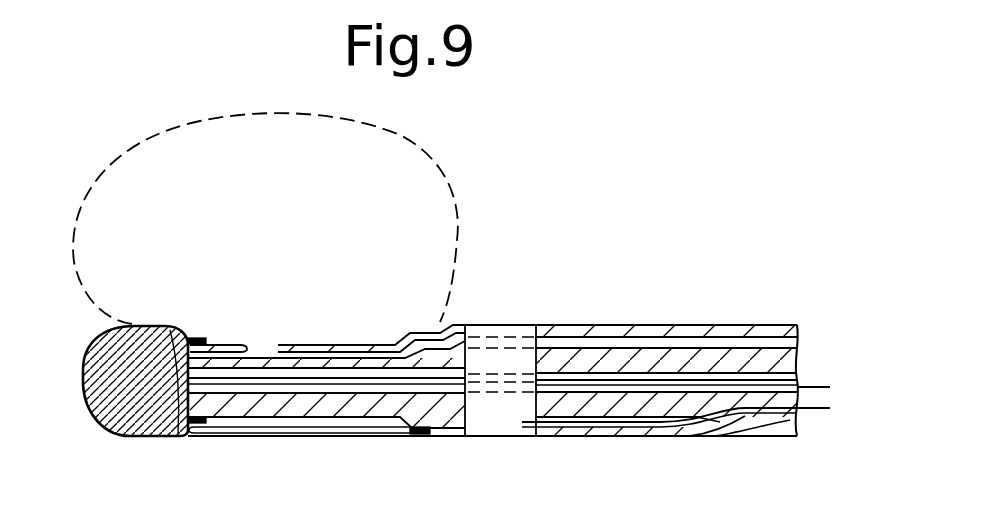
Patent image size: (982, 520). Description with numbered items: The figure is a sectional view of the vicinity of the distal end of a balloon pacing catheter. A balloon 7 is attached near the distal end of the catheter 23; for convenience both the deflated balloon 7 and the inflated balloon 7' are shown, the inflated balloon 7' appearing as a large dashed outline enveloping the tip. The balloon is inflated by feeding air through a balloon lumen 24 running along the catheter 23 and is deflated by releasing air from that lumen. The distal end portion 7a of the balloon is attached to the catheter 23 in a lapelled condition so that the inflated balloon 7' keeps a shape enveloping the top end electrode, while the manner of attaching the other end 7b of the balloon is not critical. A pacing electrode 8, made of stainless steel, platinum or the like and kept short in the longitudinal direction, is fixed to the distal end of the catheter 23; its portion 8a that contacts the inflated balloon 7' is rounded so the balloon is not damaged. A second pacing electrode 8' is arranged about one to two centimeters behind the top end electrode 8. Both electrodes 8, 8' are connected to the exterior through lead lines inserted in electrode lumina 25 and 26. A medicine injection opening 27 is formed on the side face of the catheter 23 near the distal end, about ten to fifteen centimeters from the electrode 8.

The inflated balloon 7' is at (272, 218).
The balloon 7 is at (492, 419).
The distal end portion of the balloon 7a is at (208, 436).
The other end of the balloon 7b is at (448, 324).
The pacing electrode 8 is at (135, 411).
The rounded portion of the electrode 8a is at (190, 438).
The second pacing electrode 8' is at (631, 411).
The catheter 23 is at (460, 443).
The balloon lumen 24 is at (563, 345).
The electrode lumen 25 is at (606, 382).
The electrode lumen 26 is at (646, 420).
The medicine injection opening 27 is at (710, 438).